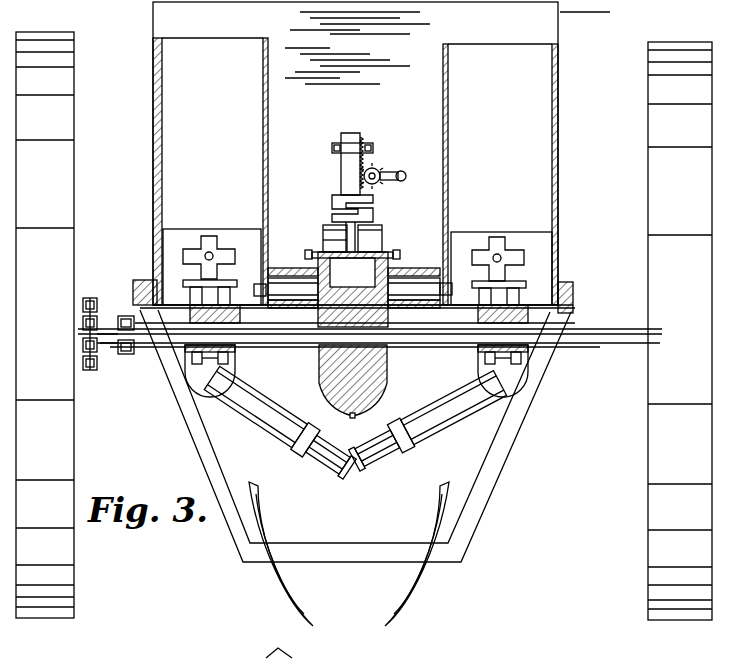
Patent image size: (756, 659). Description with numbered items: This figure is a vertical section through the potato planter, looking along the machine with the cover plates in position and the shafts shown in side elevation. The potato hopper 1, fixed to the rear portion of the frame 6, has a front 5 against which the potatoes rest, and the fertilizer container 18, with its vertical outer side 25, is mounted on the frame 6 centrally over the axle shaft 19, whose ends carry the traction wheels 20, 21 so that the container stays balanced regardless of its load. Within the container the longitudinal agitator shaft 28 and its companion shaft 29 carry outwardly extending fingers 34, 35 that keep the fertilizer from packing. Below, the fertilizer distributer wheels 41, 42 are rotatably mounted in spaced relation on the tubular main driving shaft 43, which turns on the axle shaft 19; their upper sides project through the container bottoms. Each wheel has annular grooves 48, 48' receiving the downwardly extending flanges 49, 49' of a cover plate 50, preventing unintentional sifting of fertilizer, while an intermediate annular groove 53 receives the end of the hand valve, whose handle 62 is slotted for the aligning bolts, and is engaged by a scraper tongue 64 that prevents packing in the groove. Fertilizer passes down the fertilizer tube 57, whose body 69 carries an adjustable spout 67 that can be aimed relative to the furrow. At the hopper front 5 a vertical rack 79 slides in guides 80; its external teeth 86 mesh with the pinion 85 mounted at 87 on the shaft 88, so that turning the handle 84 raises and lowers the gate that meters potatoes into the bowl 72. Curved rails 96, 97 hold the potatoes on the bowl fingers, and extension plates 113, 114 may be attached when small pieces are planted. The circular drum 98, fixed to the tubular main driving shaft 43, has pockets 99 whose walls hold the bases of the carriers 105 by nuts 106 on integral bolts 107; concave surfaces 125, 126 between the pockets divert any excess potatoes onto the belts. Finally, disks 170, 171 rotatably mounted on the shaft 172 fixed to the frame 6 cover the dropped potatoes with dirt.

The potato hopper 1 is at (560, 20).
The front of hopper 5 is at (447, 48).
The frame 6 is at (573, 297).
The fertilizer container 18 is at (357, 173).
The axle shaft 19 is at (100, 345).
The traction wheel 20 is at (40, 24).
The traction wheel 21 is at (668, 42).
The vertical outer side of fertilizer container 25 is at (558, 108).
The longitudinal agitator shaft 28 is at (205, 252).
The longitudinal agitator shaft 29 is at (494, 255).
The fingers 34 is at (212, 240).
The fingers 35 is at (500, 252).
The fertilizer distributer wheel 41 is at (240, 316).
The fertilizer distributer wheel 42 is at (478, 316).
The tubular main driving shaft 43 is at (478, 352).
The annular groove 48 is at (330, 370).
The annular groove 48' is at (406, 365).
The flange 49 is at (335, 289).
The flange 49' is at (380, 272).
The cover plate 50 is at (180, 298).
The annular groove 53 is at (356, 371).
The fertilizer tube 57 is at (268, 420).
The handle of valve 62 is at (395, 285).
The scraper tongue 64 is at (354, 288).
The spout 67 is at (408, 444).
The body of fertilizer tube 69 is at (470, 410).
The bowl 72 is at (354, 299).
The vertical rack 79 is at (352, 133).
The guides 80 is at (332, 148).
The handle 84 is at (406, 177).
The pinion 85 is at (384, 170).
The external teeth of rack 86 is at (362, 140).
The pinion mounting 87 is at (374, 186).
The shaft 88 is at (378, 168).
The curved rail 96 is at (323, 227).
The curved rail 97 is at (380, 226).
The circular drum 98 is at (387, 384).
The pockets 99 is at (353, 289).
The carrier 105 is at (332, 210).
The nut 106 is at (396, 254).
The bolt 107 is at (390, 256).
The extension plate 113 is at (323, 233).
The extension plate 114 is at (396, 227).
The concave surface 125 is at (333, 392).
The concave surface 126 is at (368, 394).
The disk 170 is at (272, 578).
The disk 171 is at (412, 582).
The shaft 172 is at (518, 437).